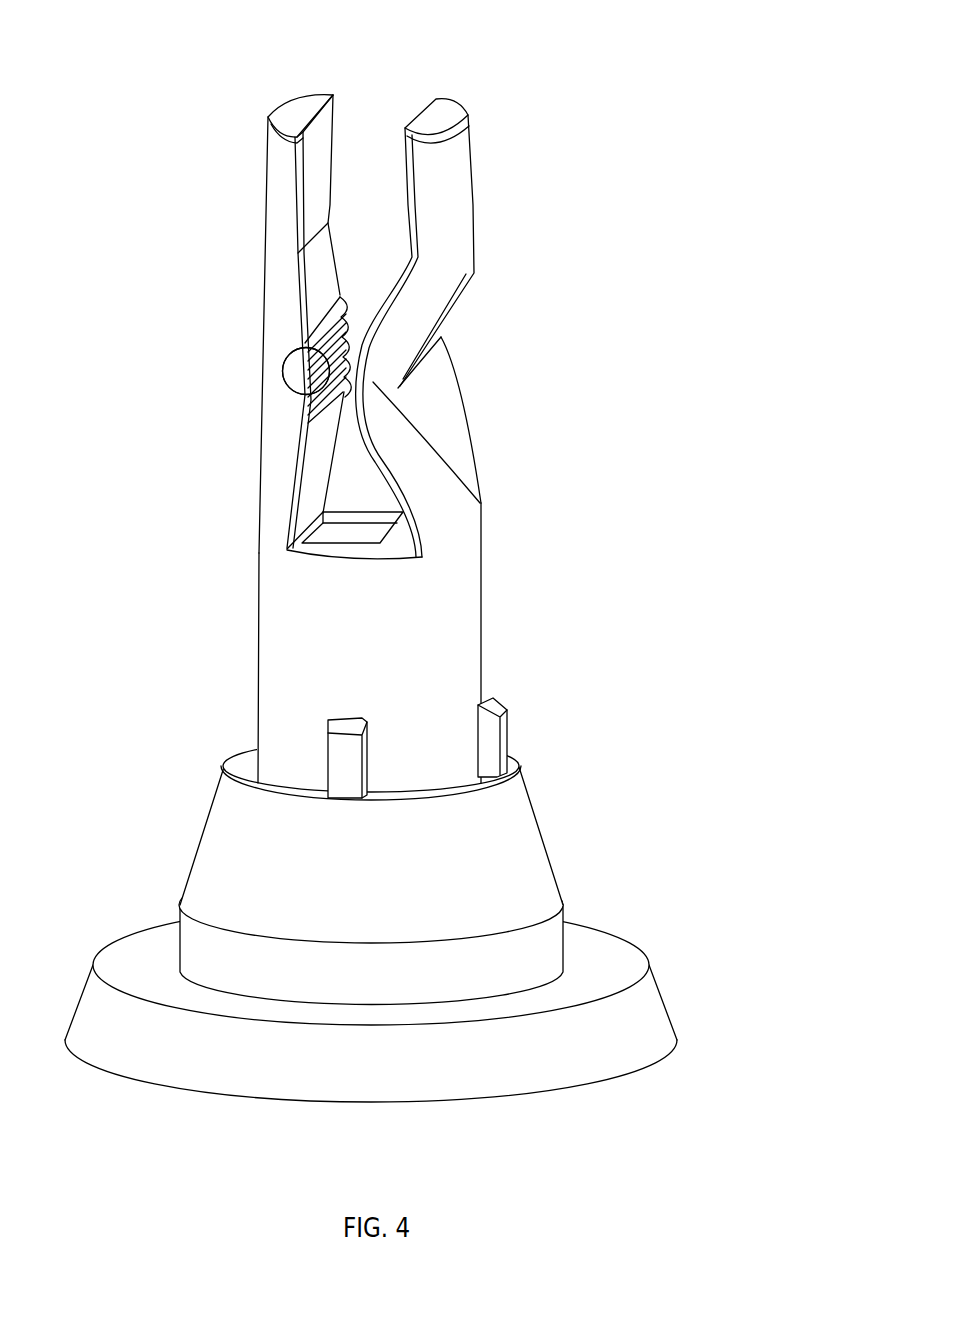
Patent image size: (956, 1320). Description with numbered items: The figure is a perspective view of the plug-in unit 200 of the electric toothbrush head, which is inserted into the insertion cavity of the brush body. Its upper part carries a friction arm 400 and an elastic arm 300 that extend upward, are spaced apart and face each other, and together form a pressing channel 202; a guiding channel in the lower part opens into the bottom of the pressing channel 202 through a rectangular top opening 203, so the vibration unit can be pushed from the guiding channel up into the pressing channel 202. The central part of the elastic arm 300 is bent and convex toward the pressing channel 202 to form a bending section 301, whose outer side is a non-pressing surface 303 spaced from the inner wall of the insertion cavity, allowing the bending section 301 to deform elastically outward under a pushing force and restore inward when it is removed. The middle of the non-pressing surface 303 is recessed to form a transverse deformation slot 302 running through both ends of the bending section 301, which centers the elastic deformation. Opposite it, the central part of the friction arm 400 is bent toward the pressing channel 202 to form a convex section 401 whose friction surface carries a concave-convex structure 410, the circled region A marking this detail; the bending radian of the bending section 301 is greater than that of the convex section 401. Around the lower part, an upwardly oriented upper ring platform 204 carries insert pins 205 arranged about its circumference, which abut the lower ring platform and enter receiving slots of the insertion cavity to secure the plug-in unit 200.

The plug-in unit 200 is at (295, 730).
The pressing channel 202 is at (375, 150).
The through slot 203 is at (353, 537).
The upper ring platform 204 is at (240, 792).
The insert pin 205 is at (495, 745).
The elastic arm 300 is at (447, 216).
The bending section 301 is at (398, 404).
The deformation slot 302 is at (442, 338).
The non-pressing surface 303 is at (437, 392).
The friction arm 400 is at (270, 213).
The convex section 401 is at (300, 340).
The contact protrusion 410 is at (277, 362).
The detail region A is at (281, 378).